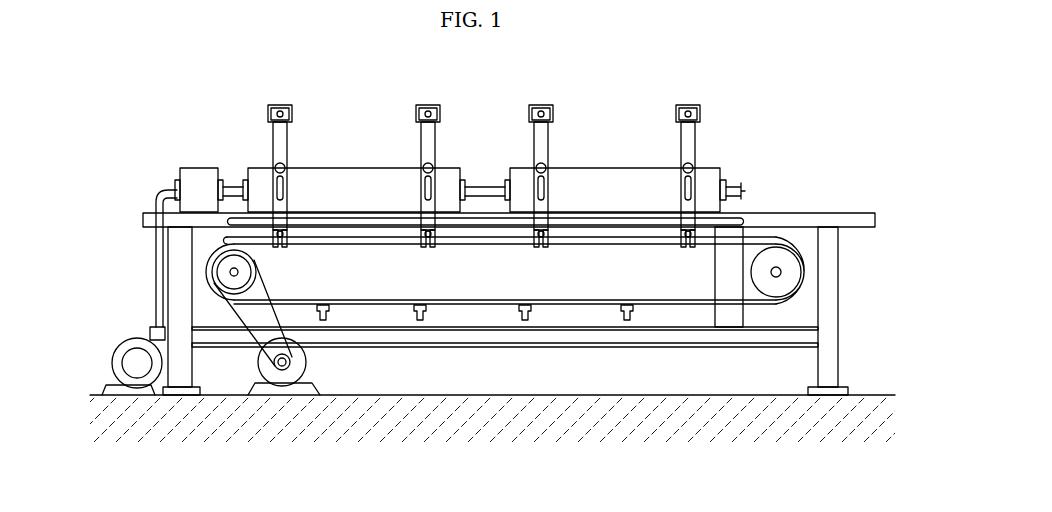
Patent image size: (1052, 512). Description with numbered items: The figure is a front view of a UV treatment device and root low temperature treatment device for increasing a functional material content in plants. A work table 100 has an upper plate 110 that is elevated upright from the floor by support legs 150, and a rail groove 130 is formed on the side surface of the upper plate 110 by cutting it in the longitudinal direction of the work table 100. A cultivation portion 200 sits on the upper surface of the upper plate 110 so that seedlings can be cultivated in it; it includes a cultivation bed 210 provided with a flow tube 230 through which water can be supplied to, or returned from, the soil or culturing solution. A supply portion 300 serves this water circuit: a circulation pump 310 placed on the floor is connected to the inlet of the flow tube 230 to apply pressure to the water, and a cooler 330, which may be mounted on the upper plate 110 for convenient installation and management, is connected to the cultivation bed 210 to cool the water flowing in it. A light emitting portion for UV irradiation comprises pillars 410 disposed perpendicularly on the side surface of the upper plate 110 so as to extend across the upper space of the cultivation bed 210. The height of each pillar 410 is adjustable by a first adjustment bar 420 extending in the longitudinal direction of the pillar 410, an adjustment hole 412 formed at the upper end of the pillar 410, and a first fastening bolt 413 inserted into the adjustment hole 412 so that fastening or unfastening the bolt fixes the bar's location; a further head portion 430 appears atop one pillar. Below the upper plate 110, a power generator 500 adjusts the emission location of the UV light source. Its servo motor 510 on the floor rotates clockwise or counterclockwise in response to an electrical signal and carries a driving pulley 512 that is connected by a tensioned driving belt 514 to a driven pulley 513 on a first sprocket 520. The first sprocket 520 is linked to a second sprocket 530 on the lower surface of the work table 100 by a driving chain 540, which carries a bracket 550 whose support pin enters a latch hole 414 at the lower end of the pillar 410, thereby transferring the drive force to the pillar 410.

The work table 100 is at (810, 212).
The upper plate 110 is at (856, 210).
The rail groove 130 is at (740, 216).
The support legs 150 is at (826, 372).
The cultivation portion 200 is at (496, 145).
The cultivation bed 210 is at (303, 180).
The flow tube 230 is at (232, 187).
The supply portion 300 is at (105, 292).
The circulation pump 310 is at (132, 367).
The cooler 330 is at (192, 178).
The pillar 410 is at (495, 144).
The adjustment hole 412 is at (433, 170).
The first fastening bolt 413 is at (276, 165).
The latch hole 414 is at (548, 233).
The first adjustment bar 420 is at (418, 106).
The post head 430 is at (274, 104).
The power generator 500 is at (492, 354).
The servo motor 510 is at (296, 380).
The driving pulley 512 is at (283, 372).
The driven pulley 513 is at (225, 256).
The driving belt 514 is at (260, 345).
The first sprocket 520 is at (219, 281).
The second sprocket 530 is at (788, 285).
The driving chain 540 is at (487, 304).
The bracket 550 is at (630, 320).